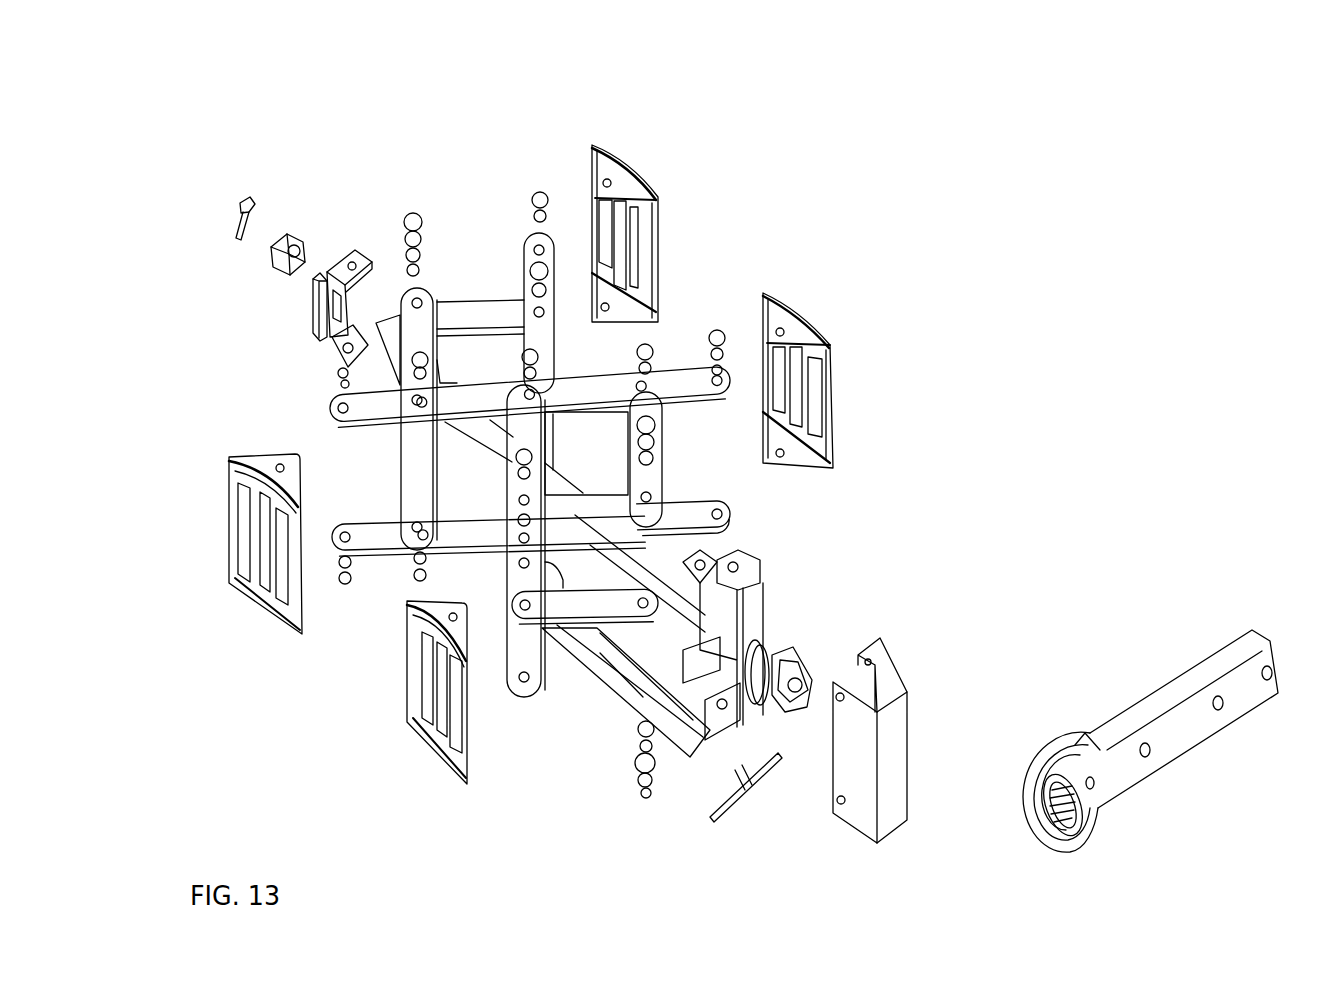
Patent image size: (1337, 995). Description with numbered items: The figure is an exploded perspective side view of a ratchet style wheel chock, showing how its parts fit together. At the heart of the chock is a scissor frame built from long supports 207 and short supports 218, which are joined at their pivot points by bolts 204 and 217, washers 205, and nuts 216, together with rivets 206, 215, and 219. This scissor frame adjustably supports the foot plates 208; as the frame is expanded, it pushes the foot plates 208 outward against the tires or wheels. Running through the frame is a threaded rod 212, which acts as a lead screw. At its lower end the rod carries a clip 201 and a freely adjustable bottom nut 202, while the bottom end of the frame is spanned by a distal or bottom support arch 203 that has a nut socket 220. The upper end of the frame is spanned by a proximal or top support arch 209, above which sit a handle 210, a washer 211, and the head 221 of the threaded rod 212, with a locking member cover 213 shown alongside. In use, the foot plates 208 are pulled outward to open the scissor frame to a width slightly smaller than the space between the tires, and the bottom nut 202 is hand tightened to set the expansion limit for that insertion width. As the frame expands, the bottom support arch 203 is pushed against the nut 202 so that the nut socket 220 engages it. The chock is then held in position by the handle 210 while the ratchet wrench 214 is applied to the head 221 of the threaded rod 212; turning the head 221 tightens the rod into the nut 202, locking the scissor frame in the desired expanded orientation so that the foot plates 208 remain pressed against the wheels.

The clip 201 is at (243, 192).
The freely adjustable bottom nut 202 is at (290, 210).
The distal or bottom support arch 203 is at (344, 250).
The bolt 204 is at (413, 200).
The washer 205 is at (438, 218).
The rivet 206 is at (545, 188).
The long support 207 is at (662, 360).
The foot plate 208 is at (802, 303).
The proximal or top support arch 209 is at (735, 535).
The handle 210 is at (757, 573).
The washer 211 is at (782, 642).
The threaded rod 212 is at (800, 653).
The locking member cover 213 is at (870, 652).
The ratchet wrench 214 is at (1125, 788).
The rivet 215 is at (762, 665).
The nut 216 is at (655, 800).
The bolt 217 is at (640, 803).
The short support 218 is at (558, 645).
The rivet 219 is at (345, 597).
The nut socket 220 is at (312, 286).
The head 221 is at (793, 703).